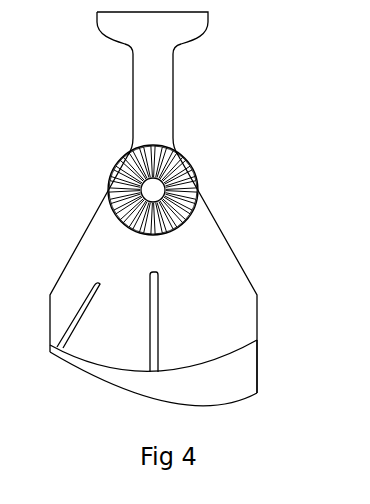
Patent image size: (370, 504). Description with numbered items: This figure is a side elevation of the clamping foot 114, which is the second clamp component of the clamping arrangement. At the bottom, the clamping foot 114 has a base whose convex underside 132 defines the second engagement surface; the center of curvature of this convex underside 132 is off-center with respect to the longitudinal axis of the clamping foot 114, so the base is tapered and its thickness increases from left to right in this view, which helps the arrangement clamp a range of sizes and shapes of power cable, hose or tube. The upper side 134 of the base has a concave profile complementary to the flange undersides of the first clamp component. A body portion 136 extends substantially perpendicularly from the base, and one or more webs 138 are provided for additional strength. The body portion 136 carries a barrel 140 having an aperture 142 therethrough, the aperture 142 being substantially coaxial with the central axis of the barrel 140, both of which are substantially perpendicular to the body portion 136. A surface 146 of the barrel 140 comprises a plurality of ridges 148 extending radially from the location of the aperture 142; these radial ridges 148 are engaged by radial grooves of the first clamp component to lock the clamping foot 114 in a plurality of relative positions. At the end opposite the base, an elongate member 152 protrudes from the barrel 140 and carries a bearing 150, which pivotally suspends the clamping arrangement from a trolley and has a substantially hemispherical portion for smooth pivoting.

The clamping foot 114 is at (267, 73).
The convex underside 132 is at (73, 367).
The upper side 134 is at (230, 355).
The body portion 136 is at (227, 275).
The webs 138 is at (75, 312).
The barrel 140 is at (175, 184).
The aperture 142 is at (150, 190).
The surface 146 is at (186, 164).
The ridges 148 is at (123, 167).
The bearing 150 is at (211, 26).
The elongate member 152 is at (133, 92).